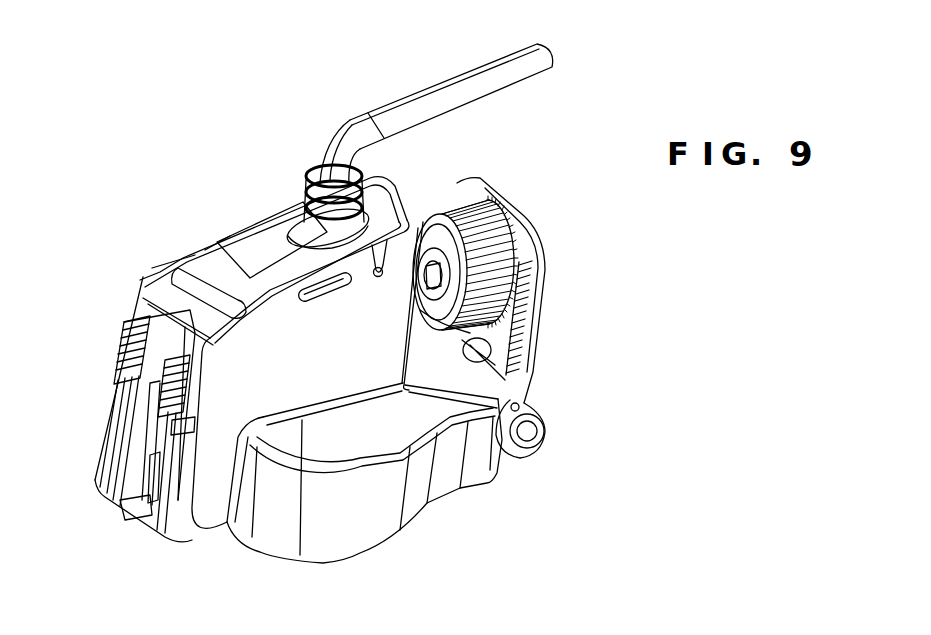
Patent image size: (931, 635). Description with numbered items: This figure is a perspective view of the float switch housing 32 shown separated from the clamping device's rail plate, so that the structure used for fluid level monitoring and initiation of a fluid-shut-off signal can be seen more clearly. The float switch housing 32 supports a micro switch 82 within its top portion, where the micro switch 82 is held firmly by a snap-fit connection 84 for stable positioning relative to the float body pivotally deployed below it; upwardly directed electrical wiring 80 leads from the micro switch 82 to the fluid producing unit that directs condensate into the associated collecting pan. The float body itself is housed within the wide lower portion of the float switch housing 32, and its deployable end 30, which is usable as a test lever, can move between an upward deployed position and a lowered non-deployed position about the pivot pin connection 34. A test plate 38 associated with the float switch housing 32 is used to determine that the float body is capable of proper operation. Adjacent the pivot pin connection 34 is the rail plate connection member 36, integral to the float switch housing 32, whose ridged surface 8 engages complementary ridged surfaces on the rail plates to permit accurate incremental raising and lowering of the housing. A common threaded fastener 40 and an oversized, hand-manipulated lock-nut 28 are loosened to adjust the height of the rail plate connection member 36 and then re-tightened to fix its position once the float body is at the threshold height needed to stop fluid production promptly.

The ridged surface 8 is at (530, 305).
The lock-nut 28 is at (450, 237).
The deployable end 30 is at (158, 517).
The float switch housing 32 is at (357, 522).
The pivot pin connection 34 is at (533, 447).
The rail plate connection member 36 is at (518, 236).
The test plate 38 is at (157, 375).
The threaded fastener 40 is at (432, 285).
The electrical wiring 80 is at (462, 94).
The micro switch 82 is at (263, 250).
The snap-fit connection 84 is at (323, 295).